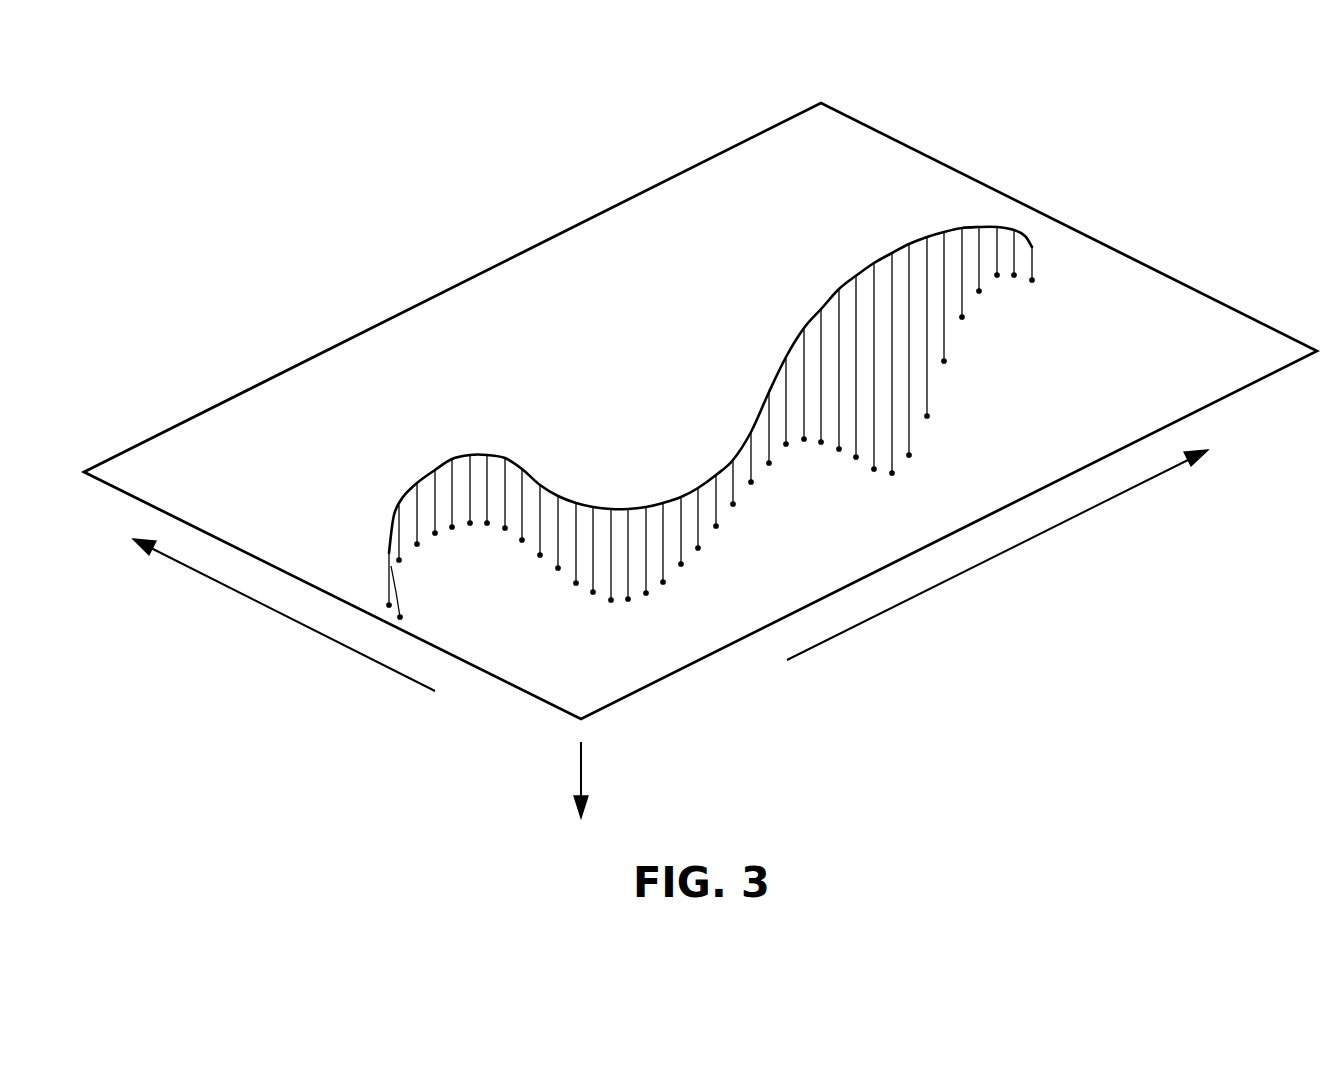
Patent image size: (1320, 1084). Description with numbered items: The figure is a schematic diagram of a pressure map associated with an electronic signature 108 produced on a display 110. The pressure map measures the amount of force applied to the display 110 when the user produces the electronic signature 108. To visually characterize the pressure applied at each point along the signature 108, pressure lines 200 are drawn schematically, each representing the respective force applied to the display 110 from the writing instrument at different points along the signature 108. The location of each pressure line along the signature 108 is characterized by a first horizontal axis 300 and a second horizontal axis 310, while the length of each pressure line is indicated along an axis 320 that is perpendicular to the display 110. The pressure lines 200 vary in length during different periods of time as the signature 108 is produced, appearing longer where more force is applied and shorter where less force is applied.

The display 110 is at (478, 305).
The electronic signature 108 is at (655, 507).
The pressure lines 200 is at (930, 385).
The first horizontal axis 300 is at (995, 563).
The second horizontal axis 310 is at (292, 617).
The axis 320 is at (580, 776).